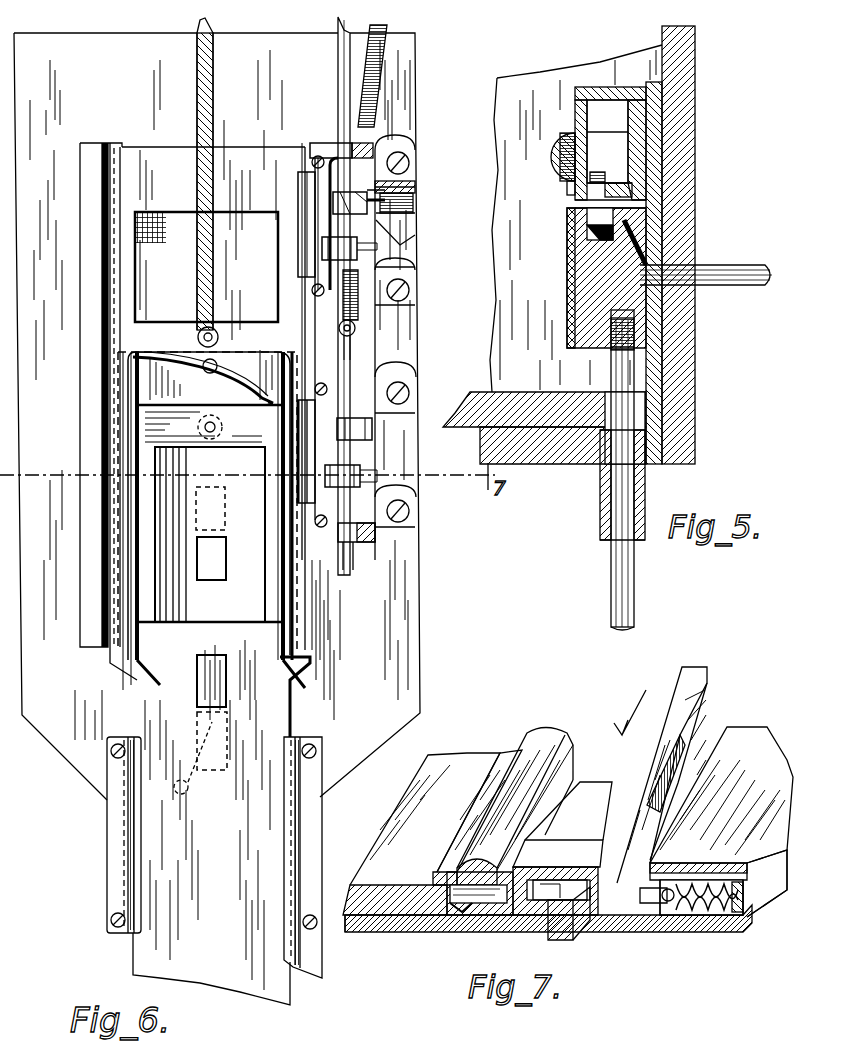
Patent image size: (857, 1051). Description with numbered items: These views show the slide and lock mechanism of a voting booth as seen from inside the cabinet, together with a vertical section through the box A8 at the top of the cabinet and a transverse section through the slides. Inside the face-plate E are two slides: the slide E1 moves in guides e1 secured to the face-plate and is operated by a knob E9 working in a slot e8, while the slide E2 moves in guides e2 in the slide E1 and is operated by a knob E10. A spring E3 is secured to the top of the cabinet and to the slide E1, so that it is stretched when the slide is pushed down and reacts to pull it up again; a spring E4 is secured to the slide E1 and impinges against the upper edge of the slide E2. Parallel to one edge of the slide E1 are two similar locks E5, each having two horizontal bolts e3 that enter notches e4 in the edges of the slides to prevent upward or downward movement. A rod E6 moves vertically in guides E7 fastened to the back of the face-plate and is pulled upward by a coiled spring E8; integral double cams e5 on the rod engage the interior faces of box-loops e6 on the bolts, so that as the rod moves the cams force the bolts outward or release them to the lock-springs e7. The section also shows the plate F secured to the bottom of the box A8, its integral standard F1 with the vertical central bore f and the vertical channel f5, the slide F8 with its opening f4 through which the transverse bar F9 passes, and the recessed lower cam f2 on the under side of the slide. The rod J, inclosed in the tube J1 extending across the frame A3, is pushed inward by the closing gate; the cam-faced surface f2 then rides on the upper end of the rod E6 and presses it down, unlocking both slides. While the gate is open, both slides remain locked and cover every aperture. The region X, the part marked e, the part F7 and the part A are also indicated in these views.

In FIG. 6, the face-plate E is at (217, 511).
In FIG. 7, the face-plate E is at (710, 925).
In FIG. 6, the slide E1 is at (211, 922).
In FIG. 6, the slide E2 is at (210, 596).
In FIG. 7, the slide E2 is at (421, 834).
In FIG. 6, the spring E3 is at (197, 115).
In FIG. 6, the spring E4 is at (210, 376).
In FIG. 6, the lock E5 is at (395, 438).
In FIG. 7, the lock E5 is at (716, 822).
In FIG. 6, the rod E6 is at (352, 368).
In FIG. 5, the rod E6 is at (706, 287).
In FIG. 7, the rod E6 is at (660, 771).
In FIG. 6, the guides E7 is at (345, 152).
In FIG. 6, the coiled spring E8 is at (386, 76).
In FIG. 6, the knob E9 is at (215, 333).
In FIG. 6, the knob E10 is at (205, 428).
In FIG. 6, the opening e is at (199, 756).
In FIG. 6, the guides e1 is at (96, 541).
In FIG. 7, the guides e1 is at (515, 807).
In FIG. 6, the guides e2 is at (140, 640).
In FIG. 7, the guides e2 is at (487, 790).
In FIG. 6, the horizontal bolts e3 is at (368, 210).
In FIG. 7, the horizontal bolts e3 is at (626, 905).
In FIG. 6, the notches e4 is at (310, 147).
In FIG. 7, the notches e4 is at (430, 925).
In FIG. 6, the double cams e5 is at (380, 192).
In FIG. 7, the double cams e5 is at (675, 745).
In FIG. 6, the box-loops e6 is at (322, 248).
In FIG. 7, the box-loops e6 is at (562, 848).
In FIG. 6, the lock-springs e7 is at (405, 200).
In FIG. 7, the lock-springs e7 is at (752, 910).
In FIG. 6, the slot e8 is at (204, 368).
In FIG. 6, the opening X is at (225, 522).
In FIG. 5, the frame A is at (592, 245).
In FIG. 5, the frame A3 is at (695, 455).
In FIG. 5, the box A8 is at (550, 392).
In FIG. 5, the plate F is at (666, 178).
In FIG. 5, the standard F1 is at (550, 150).
In FIG. 5, the strip F7 is at (665, 368).
In FIG. 5, the slide F8 is at (575, 275).
In FIG. 5, the transverse bar F9 is at (575, 222).
In FIG. 5, the vertical central bore f is at (612, 150).
In FIG. 5, the lower cam f2 is at (640, 243).
In FIG. 5, the opening f4 is at (607, 117).
In FIG. 5, the vertical channel f5 is at (567, 188).
In FIG. 5, the rod J is at (612, 572).
In FIG. 5, the tube J1 is at (607, 502).